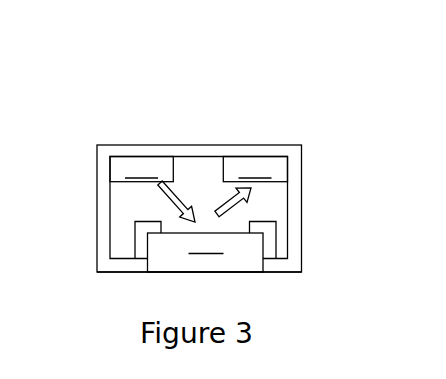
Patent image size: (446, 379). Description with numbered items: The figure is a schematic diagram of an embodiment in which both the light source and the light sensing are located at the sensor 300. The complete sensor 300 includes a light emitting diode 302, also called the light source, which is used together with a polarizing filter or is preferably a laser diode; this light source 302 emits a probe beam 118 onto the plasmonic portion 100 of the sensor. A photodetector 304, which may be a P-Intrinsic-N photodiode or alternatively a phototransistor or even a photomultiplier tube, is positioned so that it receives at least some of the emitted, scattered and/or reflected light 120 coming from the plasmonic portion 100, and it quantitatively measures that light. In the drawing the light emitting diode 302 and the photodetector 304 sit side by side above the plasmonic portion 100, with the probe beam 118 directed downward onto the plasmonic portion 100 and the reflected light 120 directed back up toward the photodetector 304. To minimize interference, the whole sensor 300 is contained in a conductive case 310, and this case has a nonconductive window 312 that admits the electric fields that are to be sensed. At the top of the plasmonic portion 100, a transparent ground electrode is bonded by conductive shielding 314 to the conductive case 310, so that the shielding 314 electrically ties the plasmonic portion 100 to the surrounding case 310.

The sensor 300 is at (228, 82).
The conductive case 310 is at (183, 152).
The nonconductive window 312 is at (170, 272).
The conductive shielding 314 is at (269, 236).
The light emitting diode 302 is at (141, 169).
The photodetector 304 is at (255, 169).
The plasmonic portion 100 is at (206, 253).
The probe beam 118 is at (162, 195).
The reflected light 120 is at (232, 206).